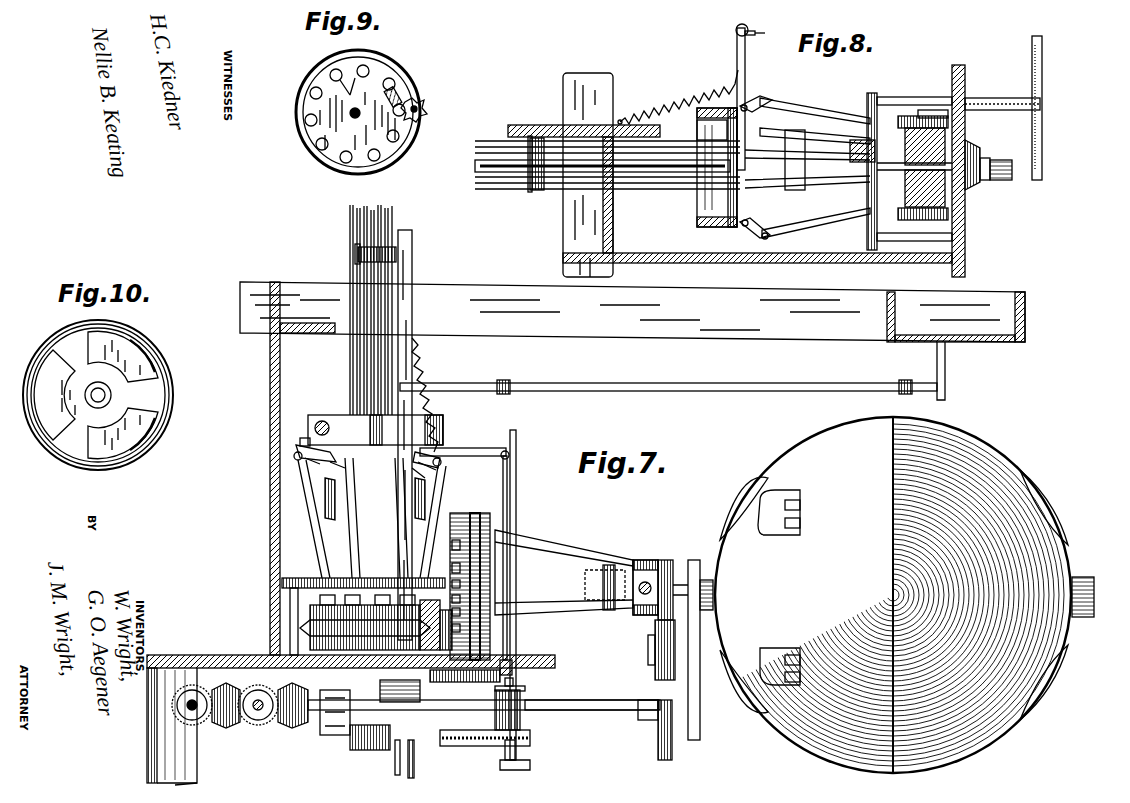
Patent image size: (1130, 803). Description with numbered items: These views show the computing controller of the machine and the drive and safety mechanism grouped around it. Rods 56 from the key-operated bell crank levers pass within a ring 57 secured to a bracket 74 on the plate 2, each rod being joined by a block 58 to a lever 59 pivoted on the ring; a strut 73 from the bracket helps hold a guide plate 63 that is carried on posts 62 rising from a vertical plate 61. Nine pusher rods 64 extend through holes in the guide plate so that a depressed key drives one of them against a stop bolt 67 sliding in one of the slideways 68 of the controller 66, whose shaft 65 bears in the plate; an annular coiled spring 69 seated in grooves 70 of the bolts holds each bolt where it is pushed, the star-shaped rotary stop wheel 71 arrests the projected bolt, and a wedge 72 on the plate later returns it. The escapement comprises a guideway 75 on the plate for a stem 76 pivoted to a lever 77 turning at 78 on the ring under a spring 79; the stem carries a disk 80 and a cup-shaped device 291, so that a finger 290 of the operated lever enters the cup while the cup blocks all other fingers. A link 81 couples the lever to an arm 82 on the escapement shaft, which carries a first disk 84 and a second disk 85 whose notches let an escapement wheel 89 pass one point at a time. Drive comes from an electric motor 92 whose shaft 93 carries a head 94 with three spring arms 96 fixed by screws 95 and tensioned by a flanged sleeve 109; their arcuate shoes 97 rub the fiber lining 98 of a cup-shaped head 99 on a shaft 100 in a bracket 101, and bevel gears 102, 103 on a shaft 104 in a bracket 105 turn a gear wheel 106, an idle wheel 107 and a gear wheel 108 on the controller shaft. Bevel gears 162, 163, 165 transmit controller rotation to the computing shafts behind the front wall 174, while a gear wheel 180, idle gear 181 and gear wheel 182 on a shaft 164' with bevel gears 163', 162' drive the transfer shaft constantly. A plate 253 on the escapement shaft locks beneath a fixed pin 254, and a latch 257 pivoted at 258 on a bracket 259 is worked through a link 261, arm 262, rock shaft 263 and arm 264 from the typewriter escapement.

In FIG. 8, the plate 2 is at (584, 122).
In FIG. 7, the plate 2 is at (412, 262).
In FIG. 8, the rods 56 is at (478, 160).
In FIG. 7, the rods 56 is at (372, 205).
In FIG. 8, the ring 57 is at (697, 220).
In FIG. 7, the ring 57 is at (305, 438).
In FIG. 8, the blocks 58 is at (783, 160).
In FIG. 8, the levers 59 is at (780, 102).
In FIG. 7, the levers 59 is at (300, 455).
In FIG. 7, the vertical plate 61 is at (220, 660).
In FIG. 8, the posts 62 is at (892, 97).
In FIG. 7, the posts 62 is at (290, 604).
In FIG. 8, the guide plate 63 is at (867, 110).
In FIG. 7, the guide plate 63 is at (292, 578).
In FIG. 8, the pusher rods 64 is at (810, 164).
In FIG. 7, the pusher rods 64 is at (312, 520).
In FIG. 9, the shaft 65 is at (355, 118).
In FIG. 8, the shaft 65 is at (975, 192).
In FIG. 8, the controller 66 is at (983, 182).
In FIG. 7, the controller 66 is at (316, 612).
In FIG. 9, the stop bolts 67 is at (318, 88).
In FIG. 8, the stop bolts 67 is at (905, 160).
In FIG. 7, the stop bolts 67 is at (367, 596).
In FIG. 9, the slideways 68 is at (350, 86).
In FIG. 8, the slideways 68 is at (905, 190).
In FIG. 9, the annular coiled spring 69 is at (298, 126).
In FIG. 8, the annular coiled spring 69 is at (930, 100).
In FIG. 7, the annular coiled spring 69 is at (300, 628).
In FIG. 8, the grooves 70 is at (900, 125).
In FIG. 9, the rotary stop wheel 71 is at (426, 103).
In FIG. 8, the rotary stop wheel 71 is at (952, 88).
In FIG. 9, the wedge 72 is at (405, 88).
In FIG. 8, the wedge 72 is at (965, 126).
In FIG. 7, the strut 73 is at (375, 430).
In FIG. 7, the bracket 74 is at (325, 420).
In FIG. 8, the guideway 75 is at (538, 190).
In FIG. 7, the guideway 75 is at (358, 254).
In FIG. 8, the stem 76 is at (528, 180).
In FIG. 7, the stem 76 is at (356, 240).
In FIG. 8, the lever 77 is at (748, 95).
In FIG. 7, the lever 77 is at (488, 448).
In FIG. 8, the pivot 78 is at (733, 110).
In FIG. 8, the spring 79 is at (695, 92).
In FIG. 7, the spring 79 is at (430, 380).
In FIG. 8, the disk 80 is at (698, 128).
In FIG. 8, the link 81 is at (758, 36).
In FIG. 7, the link 81 is at (503, 480).
In FIG. 7, the arm 82 is at (500, 732).
In FIG. 7, the first disk 84 is at (414, 770).
In FIG. 7, the second disk 85 is at (397, 776).
In FIG. 8, the escapement wheel 89 is at (1033, 78).
In FIG. 7, the escapement wheel 89 is at (370, 750).
In FIG. 7, the electric motor 92 is at (904, 595).
In FIG. 7, the motor shaft 93 is at (585, 580).
In FIG. 7, the head 94 is at (648, 560).
In FIG. 7, the screws 95 is at (644, 596).
In FIG. 10, the spring arms 96 is at (140, 340).
In FIG. 7, the spring arms 96 is at (532, 578).
In FIG. 10, the arcuate shoes 97 is at (132, 383).
In FIG. 10, the fiber lining 98 is at (170, 378).
In FIG. 10, the cup-shaped head 99 is at (168, 405).
In FIG. 7, the cup-shaped head 99 is at (486, 520).
In FIG. 10, the shaft 100 is at (98, 388).
In FIG. 7, the shaft 100 is at (470, 566).
In FIG. 7, the bracket 101 is at (470, 542).
In FIG. 7, the bevel gear 102 is at (470, 583).
In FIG. 7, the bevel gear 103 is at (470, 598).
In FIG. 7, the shaft 104 is at (470, 612).
In FIG. 7, the bracket 105 is at (470, 627).
In FIG. 7, the gear wheel 106 is at (465, 679).
In FIG. 7, the idle wheel 107 is at (400, 691).
In FIG. 8, the gear wheel 108 is at (1000, 160).
In FIG. 7, the flanged sleeve 109 is at (610, 565).
In FIG. 7, the bevel gear 162 is at (187, 717).
In FIG. 7, the bevel gear 162' is at (255, 724).
In FIG. 7, the bevel gear 163 is at (221, 716).
In FIG. 7, the bevel gear 163' is at (293, 716).
In FIG. 7, the shaft 164' is at (592, 717).
In FIG. 7, the bevel gear 165 is at (325, 728).
In FIG. 7, the front wall 174 is at (180, 776).
In FIG. 7, the gear wheel 180 is at (668, 560).
In FIG. 7, the idle gear wheel 181 is at (655, 655).
In FIG. 7, the gear wheel 182 is at (658, 735).
In FIG. 7, the plate 253 is at (495, 698).
In FIG. 7, the fixed pin 254 is at (525, 688).
In FIG. 7, the latch 257 is at (515, 768).
In FIG. 7, the pivot 258 is at (512, 668).
In FIG. 7, the bracket 259 is at (496, 685).
In FIG. 7, the link 261 is at (516, 492).
In FIG. 7, the arm 262 is at (504, 394).
In FIG. 7, the rock shaft 263 is at (822, 380).
In FIG. 7, the arm 264 is at (906, 380).
In FIG. 8, the finger 290 is at (795, 245).
In FIG. 8, the cup-shaped device 291 is at (815, 135).
In FIG. 7, the cup-shaped device 291 is at (428, 478).